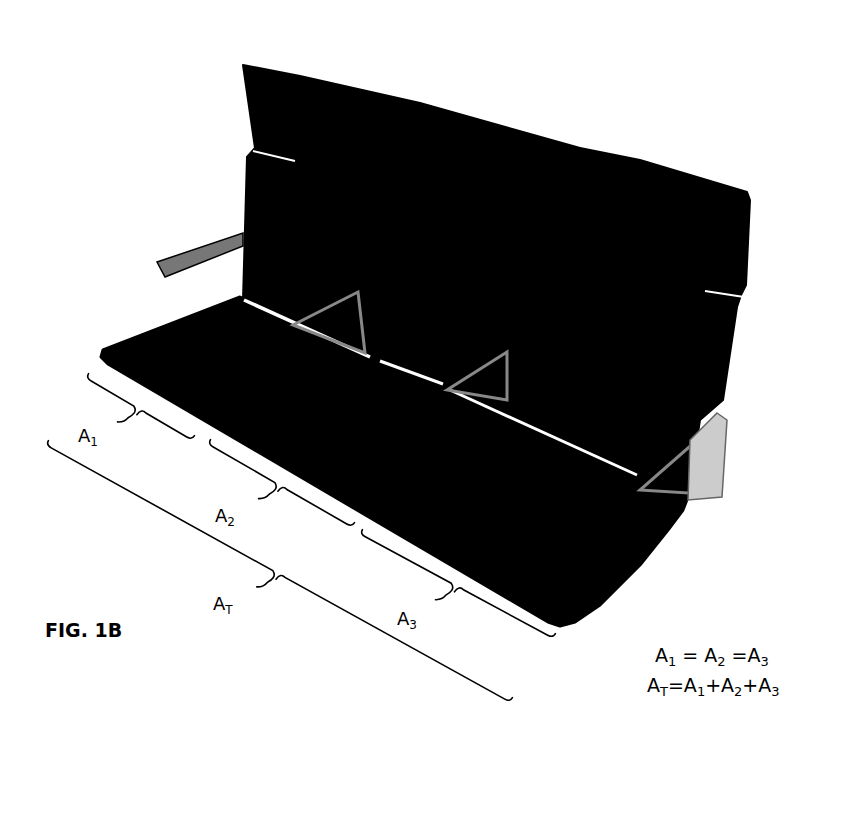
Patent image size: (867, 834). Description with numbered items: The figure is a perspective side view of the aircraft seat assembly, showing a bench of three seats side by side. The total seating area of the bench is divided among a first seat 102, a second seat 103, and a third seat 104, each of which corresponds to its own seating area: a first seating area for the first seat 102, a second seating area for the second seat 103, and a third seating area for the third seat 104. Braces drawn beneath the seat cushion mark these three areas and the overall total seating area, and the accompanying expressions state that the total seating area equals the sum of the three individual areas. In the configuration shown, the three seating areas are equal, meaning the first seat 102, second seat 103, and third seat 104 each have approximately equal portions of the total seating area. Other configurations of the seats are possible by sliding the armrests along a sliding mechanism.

The first seat 102 is at (323, 63).
The second seat 103 is at (469, 95).
The third seat 104 is at (634, 137).